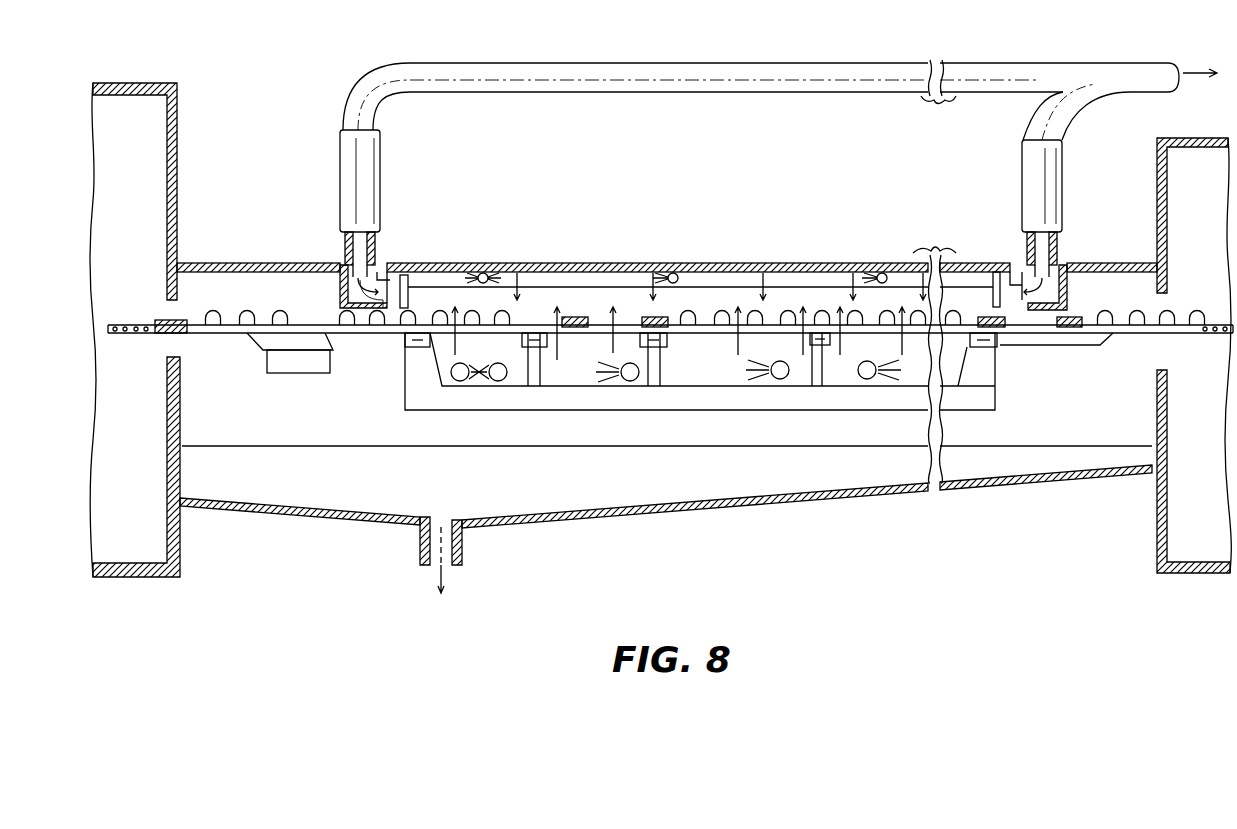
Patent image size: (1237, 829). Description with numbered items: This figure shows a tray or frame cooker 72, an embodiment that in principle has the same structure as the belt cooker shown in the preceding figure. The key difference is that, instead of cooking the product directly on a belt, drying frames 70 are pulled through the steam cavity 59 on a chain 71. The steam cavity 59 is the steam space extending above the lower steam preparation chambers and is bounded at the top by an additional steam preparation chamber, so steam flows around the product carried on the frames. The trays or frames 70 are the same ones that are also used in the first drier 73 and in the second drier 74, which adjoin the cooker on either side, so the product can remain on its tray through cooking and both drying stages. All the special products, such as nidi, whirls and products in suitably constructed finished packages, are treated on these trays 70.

The steam cavity 59 is at (582, 300).
The drying frames 70 is at (225, 323).
The chain 71 is at (133, 337).
The tray or frame cooker 72 is at (515, 532).
The first drier 73 is at (157, 66).
The second drier 74 is at (1173, 527).